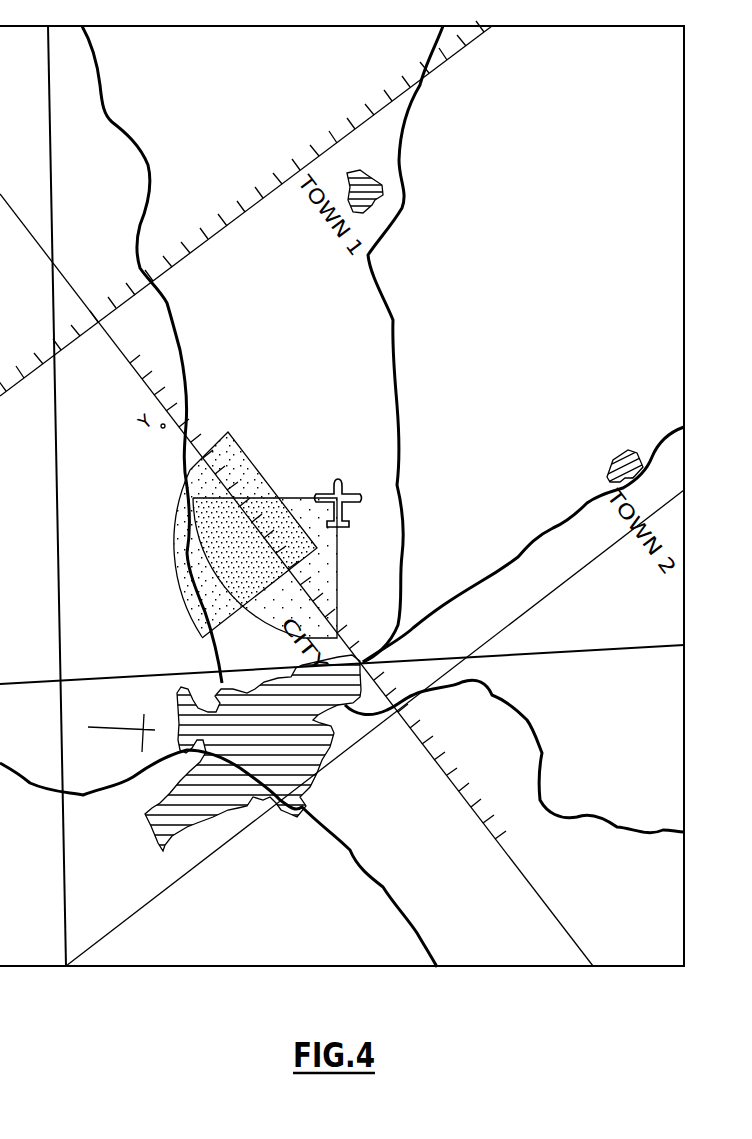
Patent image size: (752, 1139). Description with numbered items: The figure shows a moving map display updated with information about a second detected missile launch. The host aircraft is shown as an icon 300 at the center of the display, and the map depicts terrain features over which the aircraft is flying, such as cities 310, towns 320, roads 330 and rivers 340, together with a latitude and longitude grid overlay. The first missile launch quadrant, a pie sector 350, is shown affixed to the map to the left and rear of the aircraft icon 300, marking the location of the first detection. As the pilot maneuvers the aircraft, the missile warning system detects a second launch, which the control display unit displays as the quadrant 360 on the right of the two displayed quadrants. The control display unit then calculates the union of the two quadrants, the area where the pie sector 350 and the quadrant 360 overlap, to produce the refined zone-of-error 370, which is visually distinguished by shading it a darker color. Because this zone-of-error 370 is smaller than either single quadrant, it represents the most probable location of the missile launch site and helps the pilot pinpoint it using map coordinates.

The aircraft icon 300 is at (340, 480).
The cities 310 is at (297, 825).
The towns 320 is at (383, 176).
The roads 330 is at (140, 147).
The rivers 340 is at (532, 724).
The pie sector 350 is at (265, 472).
The quadrant 360 is at (337, 553).
The refined zone-of-error 370 is at (203, 557).